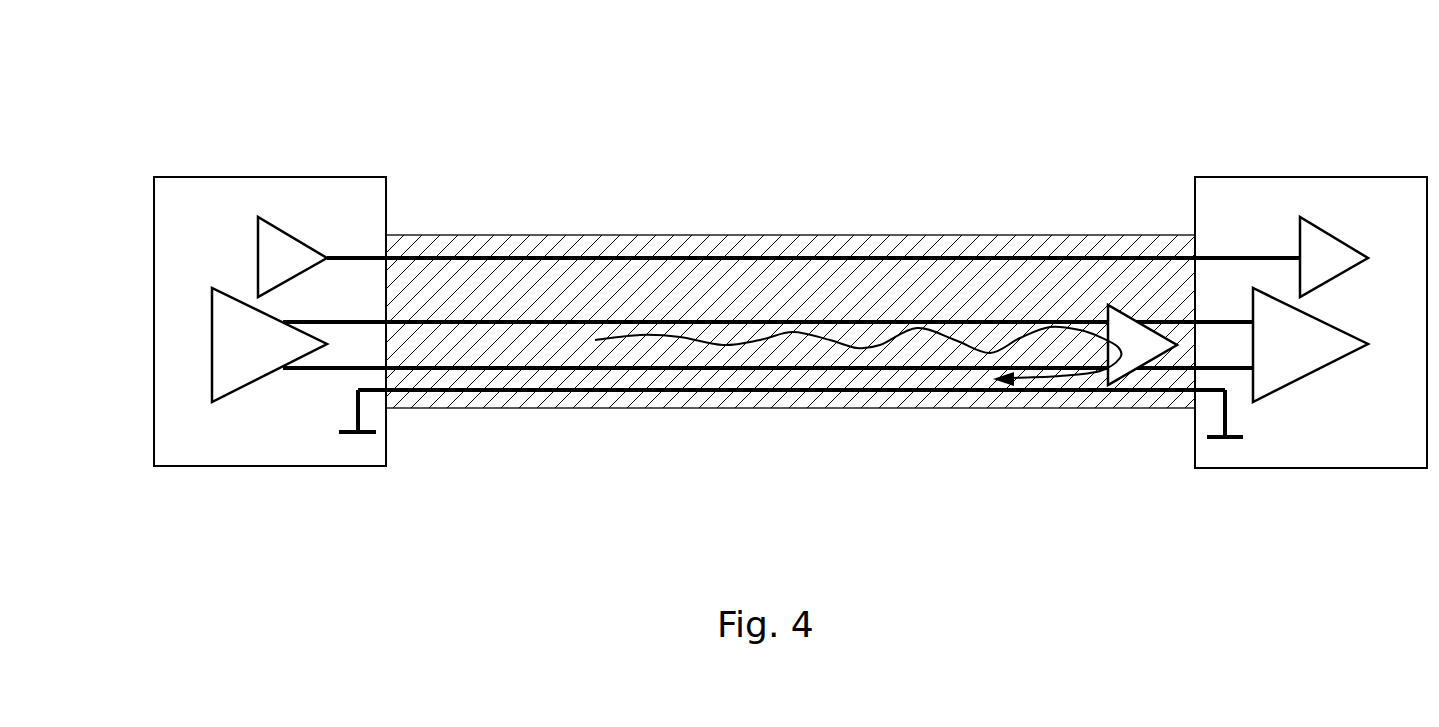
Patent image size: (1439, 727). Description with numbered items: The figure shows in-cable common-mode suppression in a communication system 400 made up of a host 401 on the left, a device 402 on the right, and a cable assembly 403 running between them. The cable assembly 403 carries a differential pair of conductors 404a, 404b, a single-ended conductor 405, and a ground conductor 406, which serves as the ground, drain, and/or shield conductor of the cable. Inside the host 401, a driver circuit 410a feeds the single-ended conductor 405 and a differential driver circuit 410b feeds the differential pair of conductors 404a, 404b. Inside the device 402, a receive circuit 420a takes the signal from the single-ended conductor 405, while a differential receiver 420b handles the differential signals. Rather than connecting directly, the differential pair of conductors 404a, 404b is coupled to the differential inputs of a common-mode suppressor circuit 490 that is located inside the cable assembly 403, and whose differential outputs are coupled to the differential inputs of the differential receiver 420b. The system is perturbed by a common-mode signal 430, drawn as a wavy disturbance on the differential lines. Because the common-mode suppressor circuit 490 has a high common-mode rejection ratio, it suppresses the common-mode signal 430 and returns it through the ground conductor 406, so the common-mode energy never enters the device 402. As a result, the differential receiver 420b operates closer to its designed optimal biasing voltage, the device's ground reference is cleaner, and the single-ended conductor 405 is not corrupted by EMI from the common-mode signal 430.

The communication system 400 is at (155, 62).
The host 401 is at (214, 461).
The device 402 is at (1417, 461).
The cable assembly 403 is at (443, 235).
The differential pair of conductors 404a is at (407, 323).
The differential pair of conductors 404b is at (523, 370).
The single-ended conductor 405 is at (797, 253).
The ground conductor 406 is at (638, 395).
The driver circuit 410a is at (265, 257).
The differential driver circuit 410b is at (223, 352).
The receive circuit 420a is at (1308, 240).
The differential receiver 420b is at (1293, 328).
The common-mode signal 430 is at (967, 350).
The common-mode suppressor circuit 490 is at (1150, 350).